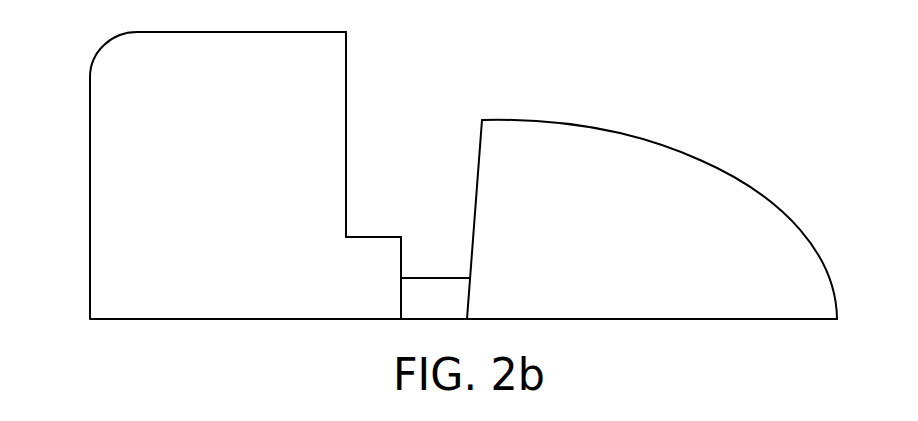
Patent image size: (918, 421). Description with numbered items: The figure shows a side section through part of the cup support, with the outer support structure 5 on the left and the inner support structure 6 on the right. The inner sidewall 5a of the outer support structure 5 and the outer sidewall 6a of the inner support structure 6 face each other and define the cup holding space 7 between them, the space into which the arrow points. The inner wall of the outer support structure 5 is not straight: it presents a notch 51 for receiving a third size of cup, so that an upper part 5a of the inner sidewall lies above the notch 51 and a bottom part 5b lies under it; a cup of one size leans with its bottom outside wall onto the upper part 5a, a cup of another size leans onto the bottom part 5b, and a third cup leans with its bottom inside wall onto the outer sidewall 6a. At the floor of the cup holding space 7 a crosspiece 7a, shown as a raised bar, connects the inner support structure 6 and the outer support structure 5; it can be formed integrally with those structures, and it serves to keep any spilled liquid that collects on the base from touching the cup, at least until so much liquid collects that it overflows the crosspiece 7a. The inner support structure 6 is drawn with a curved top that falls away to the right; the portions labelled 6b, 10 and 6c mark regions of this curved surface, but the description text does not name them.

The outer support structure 5 is at (221, 175).
The inner sidewall of the outer support structure 5a is at (346, 99).
The notch 51 is at (365, 227).
The bottom part of the inner sidewall 5b is at (399, 267).
The cup holding space 7 is at (440, 194).
The crosspiece 7a is at (425, 295).
The inner support structure 6 is at (652, 198).
The outer sidewall of the inner support structure 6a is at (477, 194).
The upper curved surface portion 6b is at (567, 148).
The curved outer surface 10 is at (638, 137).
The lower curved surface portion 6c is at (747, 222).